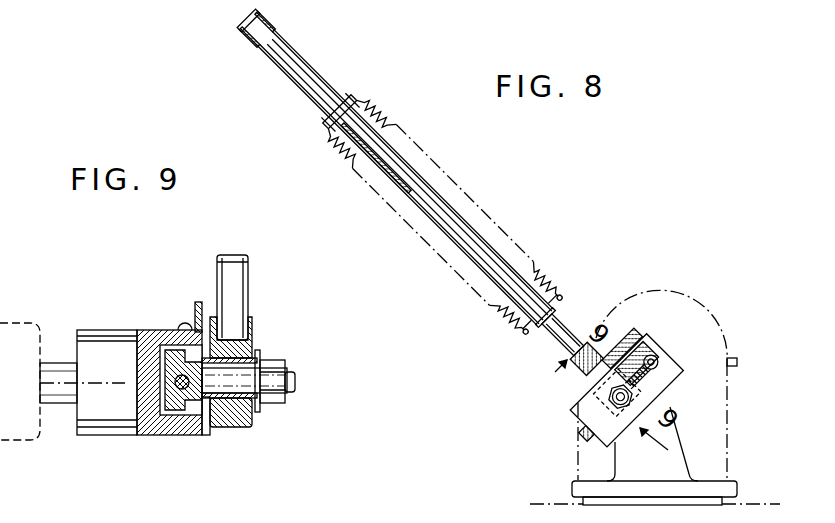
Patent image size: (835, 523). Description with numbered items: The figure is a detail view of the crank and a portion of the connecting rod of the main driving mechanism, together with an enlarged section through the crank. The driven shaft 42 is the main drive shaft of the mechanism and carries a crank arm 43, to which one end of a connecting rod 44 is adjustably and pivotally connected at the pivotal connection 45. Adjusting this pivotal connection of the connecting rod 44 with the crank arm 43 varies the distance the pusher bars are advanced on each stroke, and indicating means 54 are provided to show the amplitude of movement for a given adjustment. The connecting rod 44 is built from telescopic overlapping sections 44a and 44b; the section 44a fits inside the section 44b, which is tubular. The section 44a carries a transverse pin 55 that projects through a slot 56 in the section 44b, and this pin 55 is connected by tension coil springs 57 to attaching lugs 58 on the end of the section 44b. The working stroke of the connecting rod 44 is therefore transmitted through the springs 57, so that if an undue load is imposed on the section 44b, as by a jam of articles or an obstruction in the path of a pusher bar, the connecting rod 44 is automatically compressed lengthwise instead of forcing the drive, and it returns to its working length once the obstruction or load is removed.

In FIG. 8, the driven shaft 42 is at (650, 352).
In FIG. 9, the driven shaft 42 is at (57, 372).
In FIG. 8, the crank arm 43 is at (668, 384).
In FIG. 9, the crank arm 43 is at (165, 305).
In FIG. 8, the connecting rod 44 is at (464, 182).
In FIG. 8, the connecting rod section 44a is at (573, 362).
In FIG. 9, the connecting rod section 44a is at (235, 283).
In FIG. 8, the tubular connecting rod section 44b is at (270, 24).
In FIG. 8, the pivotal connection 45 is at (623, 406).
In FIG. 9, the pivotal connection 45 is at (206, 415).
In FIG. 8, the indicating means 54 is at (630, 332).
In FIG. 9, the indicating means 54 is at (200, 302).
In FIG. 8, the transverse pin 55 is at (354, 97).
In FIG. 8, the slot 56 is at (310, 70).
In FIG. 8, the tension coil springs 57 is at (388, 108).
In FIG. 8, the attaching lugs 58 is at (566, 297).